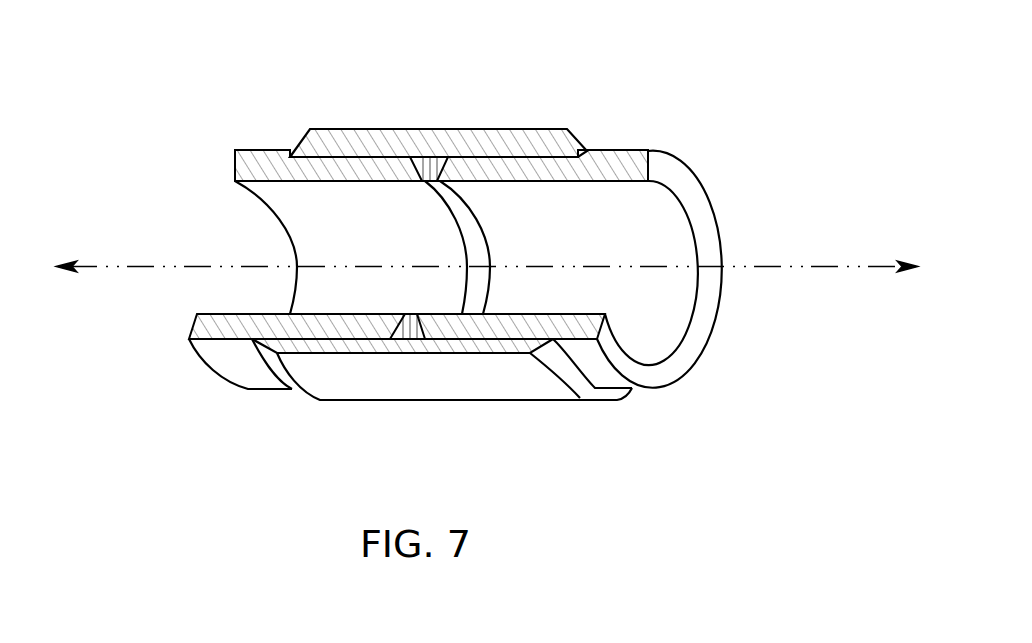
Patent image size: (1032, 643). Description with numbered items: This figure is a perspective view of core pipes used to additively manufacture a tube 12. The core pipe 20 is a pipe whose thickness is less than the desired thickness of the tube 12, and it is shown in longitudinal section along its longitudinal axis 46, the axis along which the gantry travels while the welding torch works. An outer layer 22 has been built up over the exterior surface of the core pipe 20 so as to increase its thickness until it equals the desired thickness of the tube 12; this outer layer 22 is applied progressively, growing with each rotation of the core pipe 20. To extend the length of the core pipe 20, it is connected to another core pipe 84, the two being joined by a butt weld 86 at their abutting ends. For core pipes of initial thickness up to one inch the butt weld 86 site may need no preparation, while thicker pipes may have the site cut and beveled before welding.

The tube 12 is at (134, 72).
The core pipe 20 is at (268, 173).
The outer layer 22 is at (527, 135).
The longitudinal axis 46 is at (797, 268).
The another core pipe 84 is at (625, 160).
The butt weld 86 is at (425, 176).